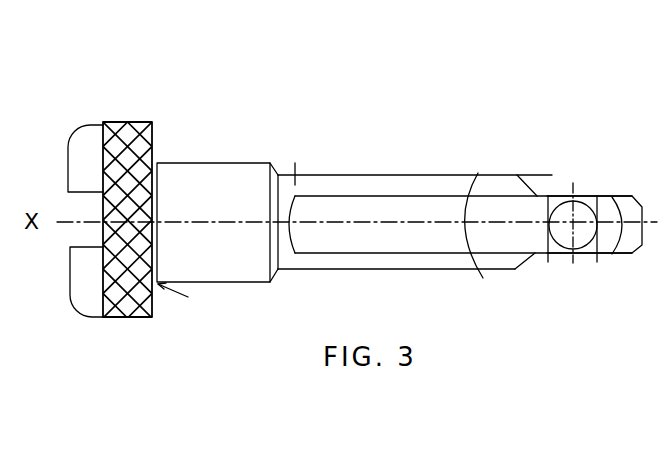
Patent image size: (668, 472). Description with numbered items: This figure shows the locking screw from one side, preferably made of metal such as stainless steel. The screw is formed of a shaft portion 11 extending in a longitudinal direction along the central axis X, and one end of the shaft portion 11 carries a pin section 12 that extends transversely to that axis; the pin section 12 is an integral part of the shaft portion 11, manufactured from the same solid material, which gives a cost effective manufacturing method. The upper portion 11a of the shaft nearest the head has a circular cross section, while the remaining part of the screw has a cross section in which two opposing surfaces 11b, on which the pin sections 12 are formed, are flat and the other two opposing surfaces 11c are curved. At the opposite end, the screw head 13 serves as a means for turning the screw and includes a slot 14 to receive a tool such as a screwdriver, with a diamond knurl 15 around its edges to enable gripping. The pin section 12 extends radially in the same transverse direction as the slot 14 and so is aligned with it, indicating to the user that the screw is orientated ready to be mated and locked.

The shaft portion 11 is at (424, 174).
The upper portion 11a is at (247, 175).
The opposing flat surfaces 11b is at (512, 208).
The opposing curved surfaces 11c is at (497, 176).
The pin section 12 is at (587, 218).
The screw head 13 is at (138, 122).
The slot 14 is at (87, 237).
The diamond knurl 15 is at (103, 122).